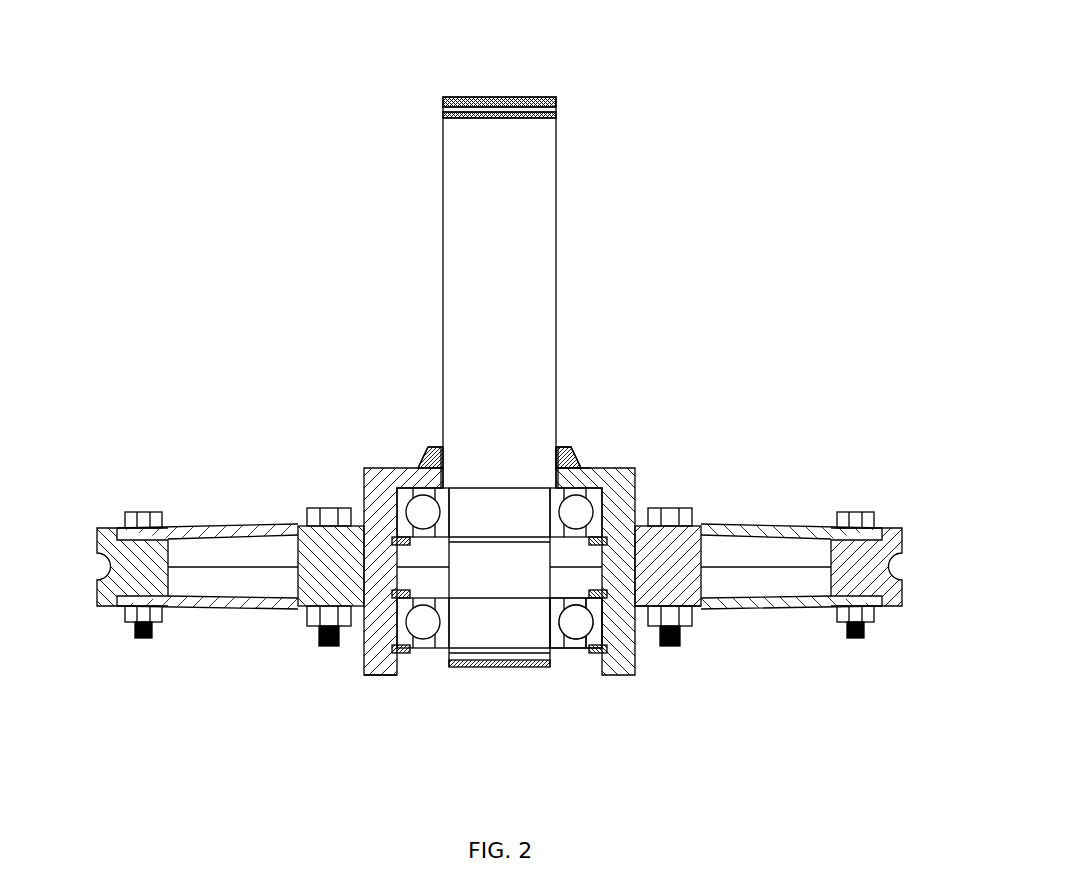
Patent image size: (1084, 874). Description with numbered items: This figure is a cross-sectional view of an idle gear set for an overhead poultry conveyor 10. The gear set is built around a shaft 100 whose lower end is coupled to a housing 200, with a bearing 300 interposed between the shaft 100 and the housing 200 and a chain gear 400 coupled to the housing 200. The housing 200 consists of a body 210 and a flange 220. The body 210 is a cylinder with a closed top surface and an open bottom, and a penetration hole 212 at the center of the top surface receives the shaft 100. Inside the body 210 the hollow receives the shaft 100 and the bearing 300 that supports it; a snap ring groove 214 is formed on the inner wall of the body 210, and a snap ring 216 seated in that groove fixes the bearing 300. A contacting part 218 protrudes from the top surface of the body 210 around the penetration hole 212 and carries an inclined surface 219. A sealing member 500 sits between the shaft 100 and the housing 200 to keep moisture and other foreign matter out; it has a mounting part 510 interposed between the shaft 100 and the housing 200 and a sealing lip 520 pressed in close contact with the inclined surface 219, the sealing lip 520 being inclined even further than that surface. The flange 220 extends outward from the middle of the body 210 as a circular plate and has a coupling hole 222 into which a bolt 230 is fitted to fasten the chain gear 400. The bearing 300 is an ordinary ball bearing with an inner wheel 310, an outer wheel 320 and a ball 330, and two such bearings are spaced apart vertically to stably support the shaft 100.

The idle gear set for an overhead poultry conveyor 10 is at (676, 88).
The shaft 100 is at (533, 216).
The housing 200 is at (499, 535).
The body 210 is at (623, 485).
The penetration hole 212 is at (557, 463).
The snap ring groove 214 is at (365, 648).
The snap ring 216 is at (402, 657).
The contacting part 218 is at (566, 450).
The inclined surface 219 is at (579, 457).
The flange 220 is at (710, 525).
The coupling hole 222 is at (707, 612).
The bolt 230 is at (668, 650).
The bearing 300 is at (373, 500).
The inner wheel 310 is at (562, 650).
The outer wheel 320 is at (596, 658).
The ball 330 is at (573, 650).
The chain gear 400 is at (766, 606).
The sealing member 500 is at (433, 452).
The mounting part 510 is at (418, 462).
The sealing lip 520 is at (423, 458).